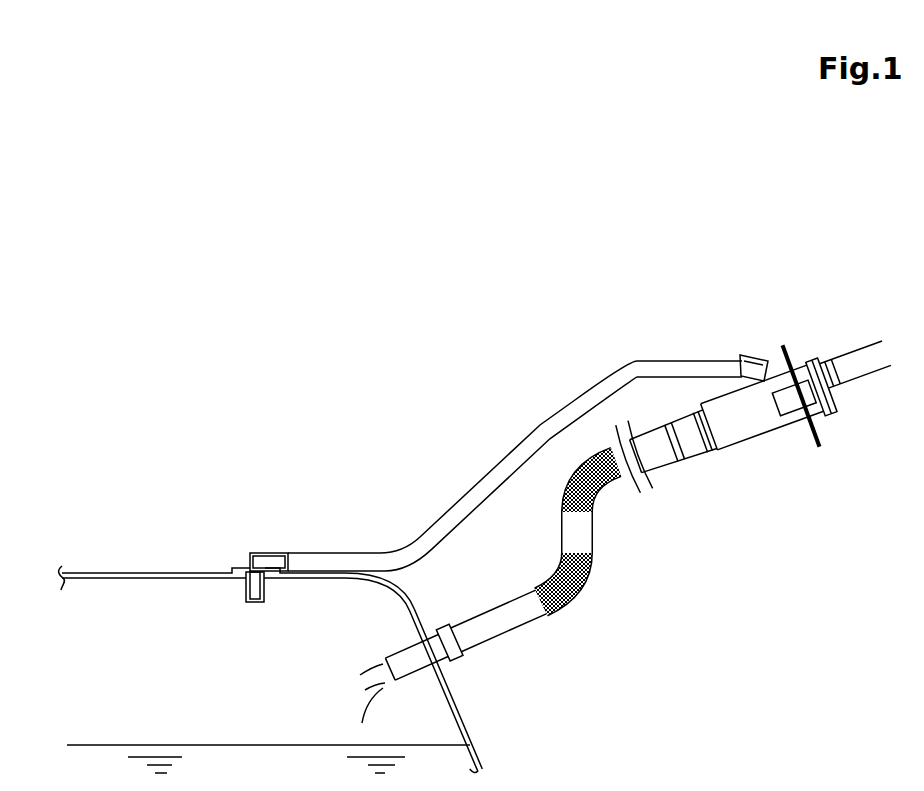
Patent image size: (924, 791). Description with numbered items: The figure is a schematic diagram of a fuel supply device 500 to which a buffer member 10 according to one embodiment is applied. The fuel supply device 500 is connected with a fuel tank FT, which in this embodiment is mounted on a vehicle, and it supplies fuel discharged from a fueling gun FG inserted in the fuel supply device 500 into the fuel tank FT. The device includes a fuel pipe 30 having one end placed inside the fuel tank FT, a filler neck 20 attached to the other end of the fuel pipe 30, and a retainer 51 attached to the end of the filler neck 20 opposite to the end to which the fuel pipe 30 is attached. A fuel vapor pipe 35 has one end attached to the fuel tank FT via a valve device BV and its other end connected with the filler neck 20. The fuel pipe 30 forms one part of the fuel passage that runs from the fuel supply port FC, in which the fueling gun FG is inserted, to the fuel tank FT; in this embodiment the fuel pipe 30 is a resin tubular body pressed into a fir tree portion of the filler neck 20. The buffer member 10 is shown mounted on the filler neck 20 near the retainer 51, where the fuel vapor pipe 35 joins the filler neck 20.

The fuel supply device 500 is at (464, 325).
The buffer member 10 is at (746, 355).
The filler neck 20 is at (720, 447).
The fuel pipe 30 is at (592, 531).
The fuel vapor pipe 35 is at (478, 487).
The retainer 51 is at (806, 352).
The fuel tank FT is at (110, 571).
The valve device BV is at (266, 553).
The fueling gun FG is at (846, 342).
The fuel supply port FC is at (833, 397).